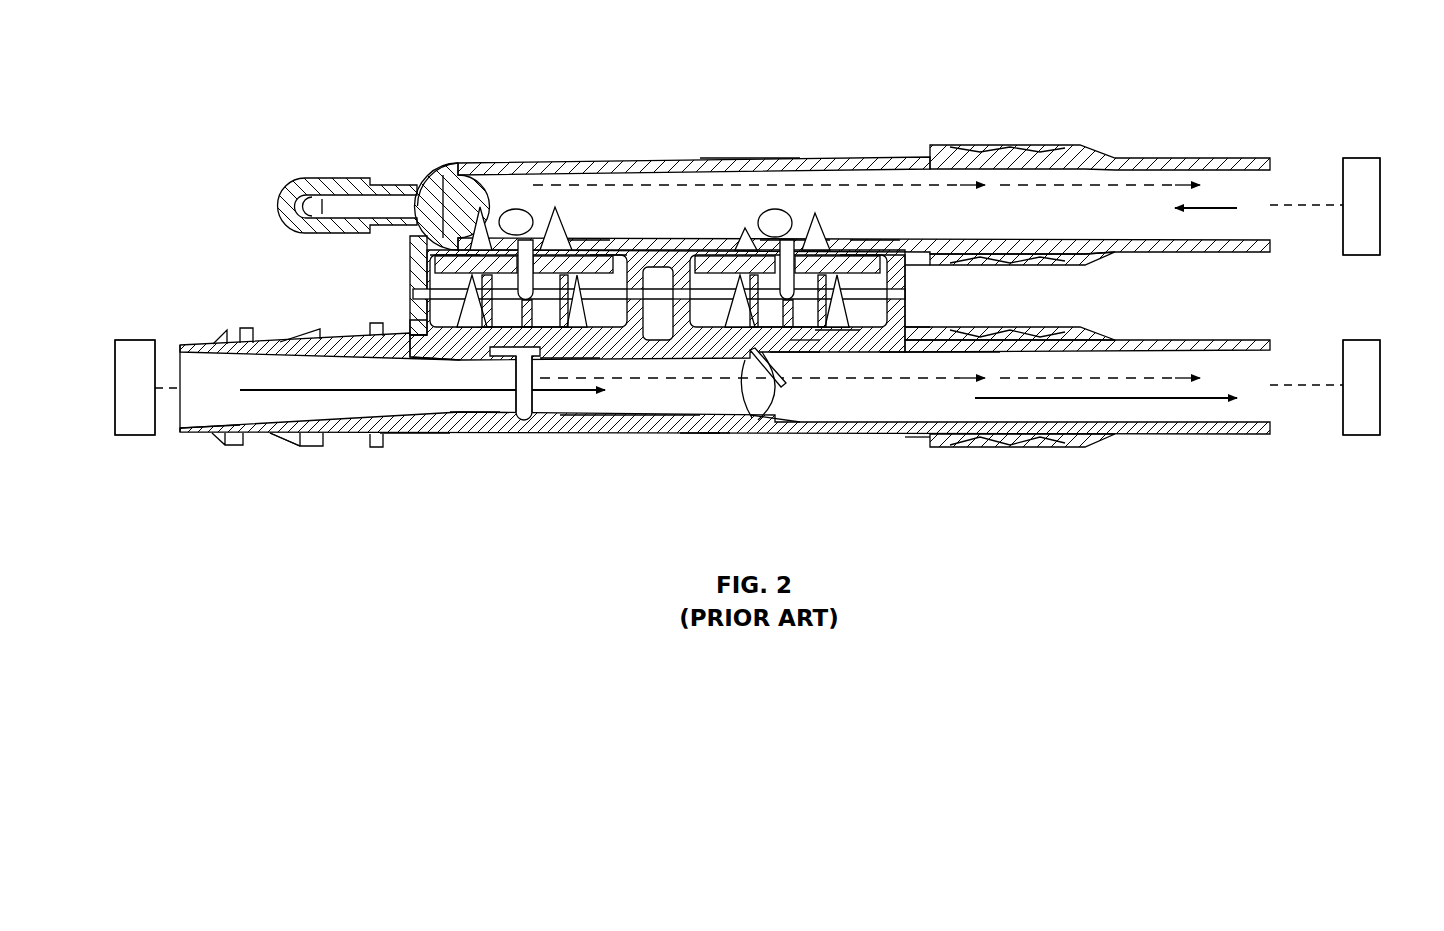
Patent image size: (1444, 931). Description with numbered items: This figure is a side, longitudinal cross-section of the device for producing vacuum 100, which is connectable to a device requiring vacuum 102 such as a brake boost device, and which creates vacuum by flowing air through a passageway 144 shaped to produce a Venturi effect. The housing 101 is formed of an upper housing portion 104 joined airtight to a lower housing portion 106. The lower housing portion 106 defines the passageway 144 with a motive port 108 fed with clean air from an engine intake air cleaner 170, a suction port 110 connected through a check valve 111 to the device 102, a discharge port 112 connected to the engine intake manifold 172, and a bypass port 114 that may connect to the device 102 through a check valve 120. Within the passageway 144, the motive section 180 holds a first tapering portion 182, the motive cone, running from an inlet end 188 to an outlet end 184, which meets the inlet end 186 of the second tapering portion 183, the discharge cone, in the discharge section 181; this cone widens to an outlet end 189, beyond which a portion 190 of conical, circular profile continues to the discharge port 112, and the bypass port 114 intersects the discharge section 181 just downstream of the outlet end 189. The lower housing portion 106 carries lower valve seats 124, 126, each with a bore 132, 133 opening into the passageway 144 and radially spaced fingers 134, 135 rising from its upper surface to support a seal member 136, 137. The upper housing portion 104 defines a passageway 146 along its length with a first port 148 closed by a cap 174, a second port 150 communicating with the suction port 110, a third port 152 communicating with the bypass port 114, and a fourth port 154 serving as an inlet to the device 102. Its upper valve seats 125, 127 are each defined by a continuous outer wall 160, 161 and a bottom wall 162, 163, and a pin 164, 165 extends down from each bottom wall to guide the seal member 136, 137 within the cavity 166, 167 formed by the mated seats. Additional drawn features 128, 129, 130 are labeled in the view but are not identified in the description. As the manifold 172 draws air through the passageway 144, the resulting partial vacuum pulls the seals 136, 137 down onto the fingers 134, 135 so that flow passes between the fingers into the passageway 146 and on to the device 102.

The device for producing vacuum 100 is at (347, 42).
The housing 101 is at (432, 172).
The device requiring vacuum 102 is at (1378, 160).
The upper housing portion 104 is at (735, 163).
The lower housing portion 106 is at (415, 425).
The motive port 108 is at (170, 348).
The suction port 110 is at (455, 362).
The check valve 111 is at (585, 240).
The discharge port 112 is at (1100, 425).
The bypass port 114 is at (762, 372).
The check valve 120 is at (875, 240).
The lower valve seat 124 is at (425, 325).
The upper valve seat 125 is at (655, 252).
The lower valve seat 126 is at (948, 338).
The upper valve seat 127 is at (905, 252).
The lower lumen 128 is at (905, 366).
The passage 129 is at (830, 345).
The port 130 is at (508, 378).
The bore 132 is at (555, 360).
The bore 133 is at (795, 335).
The radially spaced fingers 134 is at (430, 292).
The radially spaced fingers 135 is at (850, 275).
The seal member 136 is at (440, 255).
The seal member 137 is at (775, 228).
The passageway 144 is at (470, 420).
The passageway 146 is at (745, 170).
The first port 148 is at (300, 205).
The second port 150 is at (505, 280).
The third port 152 is at (793, 240).
The fourth port 154 is at (1045, 158).
The continuous outer wall 160 is at (420, 272).
The continuous outer wall 161 is at (935, 292).
The bottom wall 162 is at (525, 265).
The bottom wall 163 is at (810, 240).
The pin 164 is at (490, 278).
The pin 165 is at (790, 352).
The cavity 166 is at (605, 260).
The cavity 167 is at (900, 332).
The engine intake air cleaner 170 is at (140, 437).
The engine intake manifold 172 is at (1378, 437).
The cap 174 is at (340, 178).
The motive section 180 is at (282, 338).
The discharge section 181 is at (690, 430).
The first tapering portion 182 is at (300, 446).
The second tapering portion 183 is at (712, 435).
The outlet end 184 is at (535, 400).
The inlet end 186 is at (600, 414).
The inlet end 188 is at (215, 428).
The outlet end 189 is at (770, 422).
The portion 190 is at (895, 437).